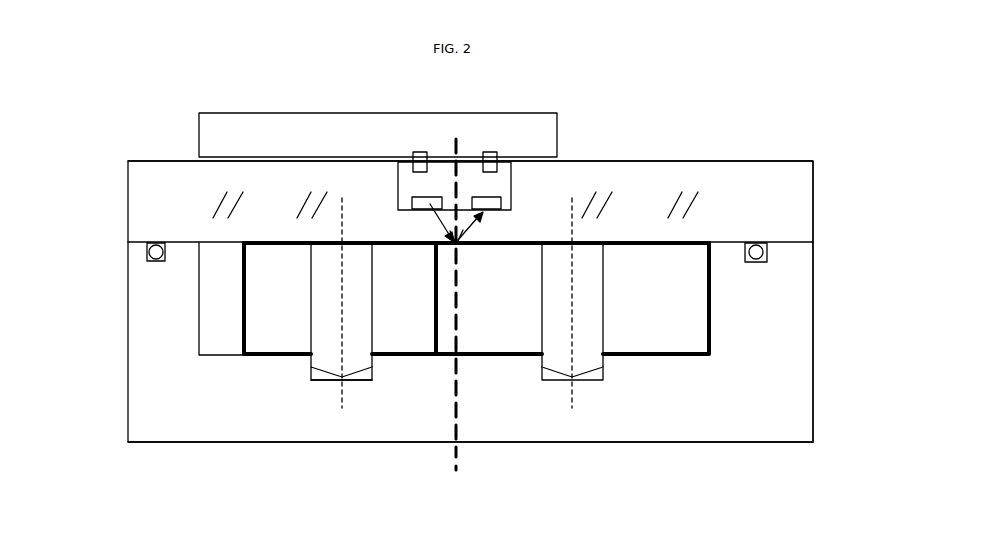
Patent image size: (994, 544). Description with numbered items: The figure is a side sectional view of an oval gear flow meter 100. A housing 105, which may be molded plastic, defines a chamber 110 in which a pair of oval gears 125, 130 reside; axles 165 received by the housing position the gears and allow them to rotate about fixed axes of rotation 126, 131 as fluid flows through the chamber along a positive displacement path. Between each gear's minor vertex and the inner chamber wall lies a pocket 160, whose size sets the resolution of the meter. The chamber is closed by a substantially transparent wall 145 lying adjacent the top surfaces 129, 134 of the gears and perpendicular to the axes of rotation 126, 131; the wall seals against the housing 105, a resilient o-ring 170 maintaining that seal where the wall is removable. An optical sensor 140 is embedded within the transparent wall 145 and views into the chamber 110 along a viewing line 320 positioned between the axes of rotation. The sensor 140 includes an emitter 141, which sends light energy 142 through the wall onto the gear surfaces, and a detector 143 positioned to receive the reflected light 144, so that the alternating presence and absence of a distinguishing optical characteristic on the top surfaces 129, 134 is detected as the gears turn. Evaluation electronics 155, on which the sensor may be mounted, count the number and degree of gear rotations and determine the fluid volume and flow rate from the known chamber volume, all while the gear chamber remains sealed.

The oval gear flow meter 100 is at (92, 191).
The housing 105 is at (189, 422).
The chamber 110 is at (200, 307).
The oval gear 125 is at (263, 330).
The axis of rotation 126 is at (345, 390).
The top surface 129 is at (260, 243).
The oval gear 130 is at (690, 320).
The axis of rotation 131 is at (572, 395).
The top surface 134 is at (690, 242).
The optical sensor 140 is at (498, 178).
The emitter 141 is at (427, 202).
The light energy 142 is at (450, 231).
The detector 143 is at (485, 203).
The reflected light 144 is at (463, 230).
The substantially transparent wall 145 is at (760, 182).
The evaluation electronics 155 is at (260, 138).
The pocket 160 is at (222, 287).
The axles 165 is at (328, 343).
The o-ring 170 is at (770, 250).
The viewing line 320 is at (457, 413).